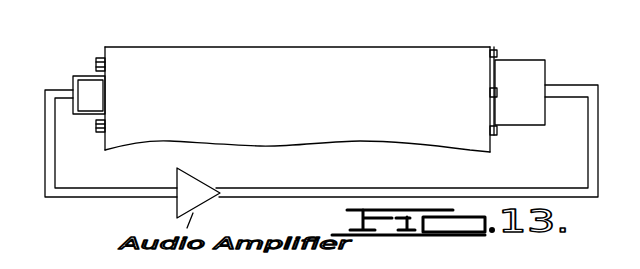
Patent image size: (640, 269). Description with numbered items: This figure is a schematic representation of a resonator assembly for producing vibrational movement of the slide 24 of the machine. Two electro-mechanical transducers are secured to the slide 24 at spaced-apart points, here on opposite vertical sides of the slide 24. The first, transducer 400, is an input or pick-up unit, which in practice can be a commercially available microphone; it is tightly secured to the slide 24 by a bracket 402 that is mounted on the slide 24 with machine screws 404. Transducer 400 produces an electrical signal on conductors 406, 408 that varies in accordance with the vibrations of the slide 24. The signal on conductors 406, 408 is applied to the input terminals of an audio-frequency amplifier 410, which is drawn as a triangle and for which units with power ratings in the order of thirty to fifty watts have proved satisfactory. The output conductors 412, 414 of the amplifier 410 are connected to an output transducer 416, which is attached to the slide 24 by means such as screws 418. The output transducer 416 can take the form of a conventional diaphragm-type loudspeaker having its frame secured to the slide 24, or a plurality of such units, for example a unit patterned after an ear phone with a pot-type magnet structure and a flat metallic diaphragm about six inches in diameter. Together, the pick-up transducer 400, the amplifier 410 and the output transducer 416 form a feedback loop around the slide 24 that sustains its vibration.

The slide 24 is at (235, 52).
The transducer 400 is at (85, 87).
The bracket 402 is at (78, 76).
The machine screws 404 is at (95, 66).
The conductor 406 is at (117, 177).
The conductor 408 is at (77, 199).
The audio-frequency amplifier 410 is at (200, 189).
The output conductor 412 is at (334, 188).
The output conductor 414 is at (262, 199).
The output transducer 416 is at (535, 70).
The screws 418 is at (497, 91).